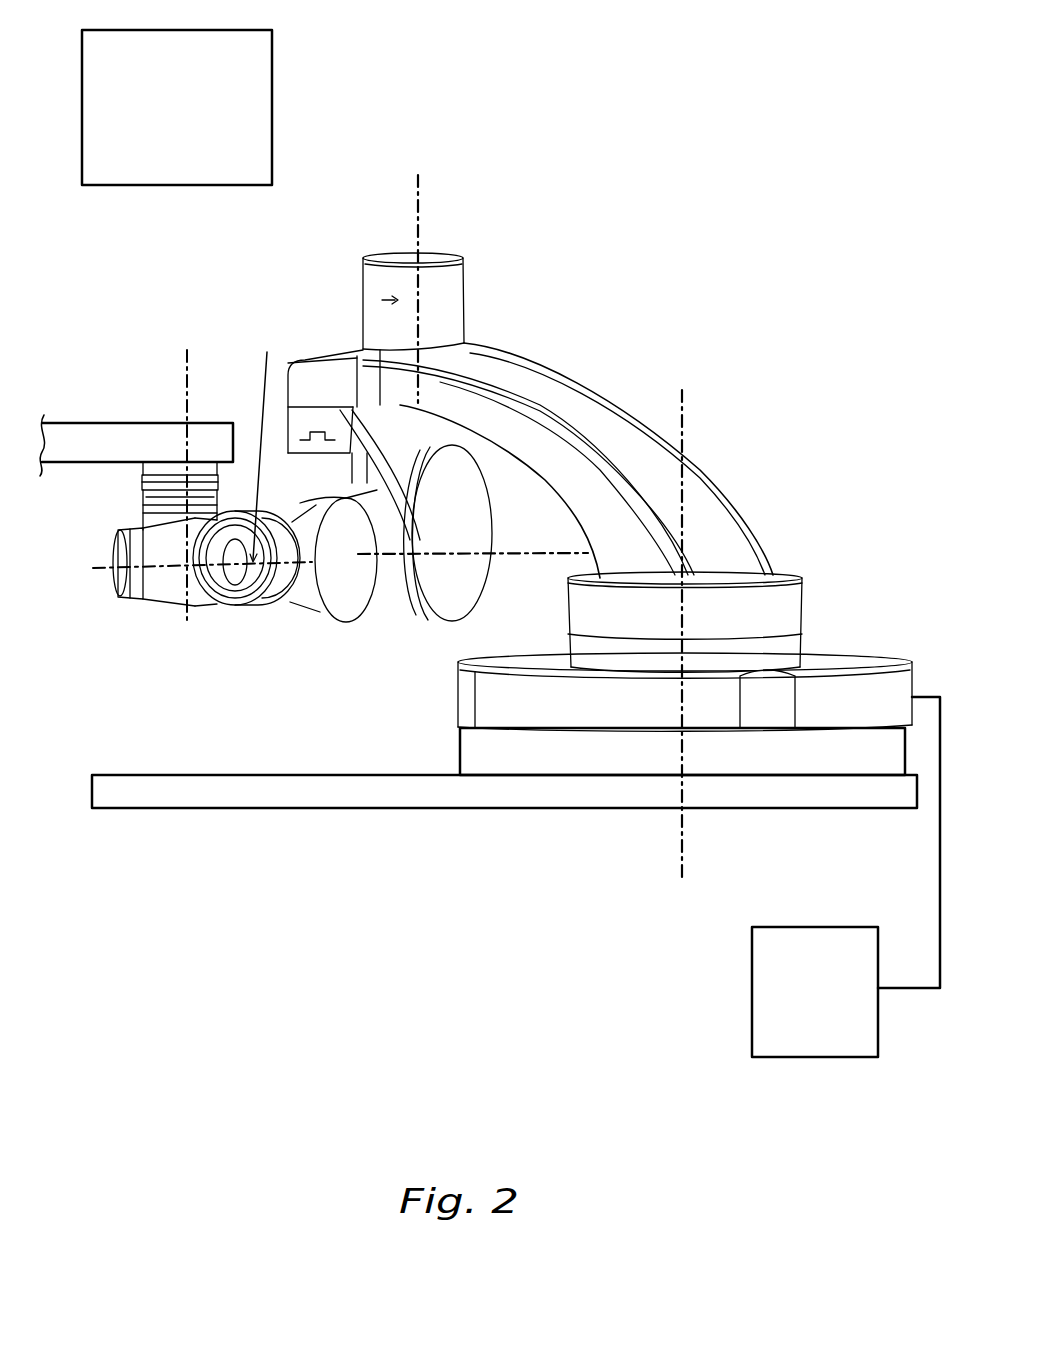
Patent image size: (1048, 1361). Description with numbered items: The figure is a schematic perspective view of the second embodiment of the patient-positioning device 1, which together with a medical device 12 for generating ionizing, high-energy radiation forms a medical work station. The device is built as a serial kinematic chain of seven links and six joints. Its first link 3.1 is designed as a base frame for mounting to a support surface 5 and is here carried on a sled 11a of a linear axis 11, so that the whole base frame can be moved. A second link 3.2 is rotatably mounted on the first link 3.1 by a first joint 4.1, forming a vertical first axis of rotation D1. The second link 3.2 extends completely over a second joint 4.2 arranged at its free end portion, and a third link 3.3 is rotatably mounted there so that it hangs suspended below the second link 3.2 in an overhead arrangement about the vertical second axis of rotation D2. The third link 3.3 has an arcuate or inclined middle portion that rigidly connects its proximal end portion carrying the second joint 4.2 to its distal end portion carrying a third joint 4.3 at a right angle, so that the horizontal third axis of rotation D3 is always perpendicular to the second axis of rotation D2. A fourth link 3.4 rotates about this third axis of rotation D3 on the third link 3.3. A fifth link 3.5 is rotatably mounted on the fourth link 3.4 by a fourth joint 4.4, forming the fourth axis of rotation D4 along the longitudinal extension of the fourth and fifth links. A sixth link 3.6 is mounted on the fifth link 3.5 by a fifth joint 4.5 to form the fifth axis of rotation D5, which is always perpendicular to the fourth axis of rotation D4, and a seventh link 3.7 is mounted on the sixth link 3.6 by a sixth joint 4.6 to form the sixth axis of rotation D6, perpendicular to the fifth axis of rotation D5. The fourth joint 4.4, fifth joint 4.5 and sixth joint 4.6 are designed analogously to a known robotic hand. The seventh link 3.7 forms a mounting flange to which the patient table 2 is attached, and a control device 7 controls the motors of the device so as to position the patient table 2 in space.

The patient-positioning device 1 is at (760, 250).
The patient table 2 is at (88, 438).
The first link 3.1 is at (850, 676).
The second link 3.2 is at (580, 410).
The third link 3.3 is at (480, 592).
The fourth link 3.4 is at (347, 611).
The fifth link 3.5 is at (260, 587).
The sixth link 3.6 is at (167, 588).
The seventh link 3.7 is at (173, 473).
The first joint 4.1 is at (775, 635).
The second joint 4.2 is at (352, 407).
The third joint 4.3 is at (377, 515).
The fourth joint 4.4 is at (253, 552).
The fifth joint 4.5 is at (140, 558).
The sixth joint 4.6 is at (212, 490).
The support surface 5 is at (465, 725).
The control device 7 is at (765, 980).
The linear axis 11 is at (272, 795).
The sled 11a is at (480, 760).
The medical device 12 is at (195, 123).
The first axis of rotation D1 is at (682, 826).
The second axis of rotation D2 is at (418, 228).
The third axis of rotation D3 is at (366, 557).
The fourth axis of rotation D4 is at (271, 440).
The fifth axis of rotation D5 is at (93, 568).
The sixth axis of rotation D6 is at (190, 378).